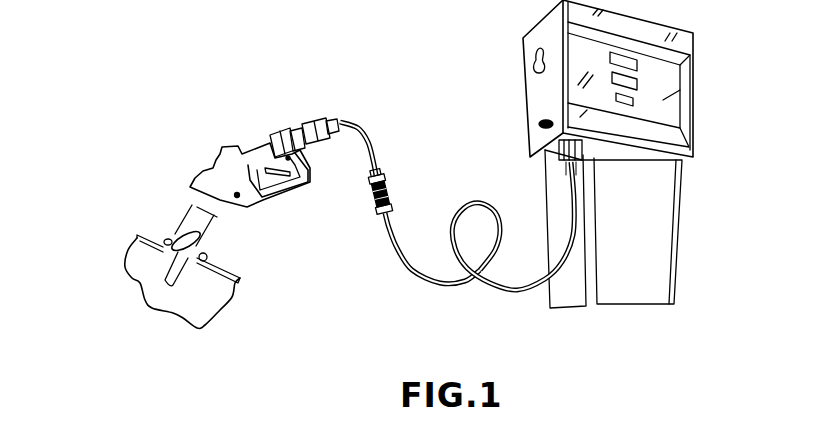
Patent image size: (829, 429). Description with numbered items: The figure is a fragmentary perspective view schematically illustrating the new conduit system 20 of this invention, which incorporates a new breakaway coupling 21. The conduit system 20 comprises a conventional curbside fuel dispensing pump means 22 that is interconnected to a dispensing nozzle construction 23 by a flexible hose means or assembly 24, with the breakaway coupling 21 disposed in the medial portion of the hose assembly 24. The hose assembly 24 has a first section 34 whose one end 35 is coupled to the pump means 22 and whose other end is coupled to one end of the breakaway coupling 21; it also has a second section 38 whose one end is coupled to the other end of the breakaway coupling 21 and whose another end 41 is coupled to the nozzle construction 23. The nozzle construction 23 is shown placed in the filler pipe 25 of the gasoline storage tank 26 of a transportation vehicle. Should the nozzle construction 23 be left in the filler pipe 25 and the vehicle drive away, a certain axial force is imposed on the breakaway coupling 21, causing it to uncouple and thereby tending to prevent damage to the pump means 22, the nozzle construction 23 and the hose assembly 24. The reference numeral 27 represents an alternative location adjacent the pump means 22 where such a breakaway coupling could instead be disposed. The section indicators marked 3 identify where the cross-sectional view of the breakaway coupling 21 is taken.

The conduit system 20 is at (394, 82).
The breakaway coupling 21 is at (349, 202).
The fuel dispensing pump means 22 is at (683, 192).
The dispensing nozzle construction 23 is at (192, 184).
The flexible hose means or assembly 24 is at (479, 203).
The filler pipe 25 is at (210, 258).
The gasoline storage tank 26 is at (140, 272).
The breakaway coupling location adjacent the pump 27 is at (587, 162).
The first section of the hose assembly 34 is at (438, 276).
The one end of the first section 35 is at (580, 178).
The second section of the hose assembly 38 is at (372, 140).
The another end of the second section 41 is at (336, 125).
The section line for FIG. 3 is at (400, 208).